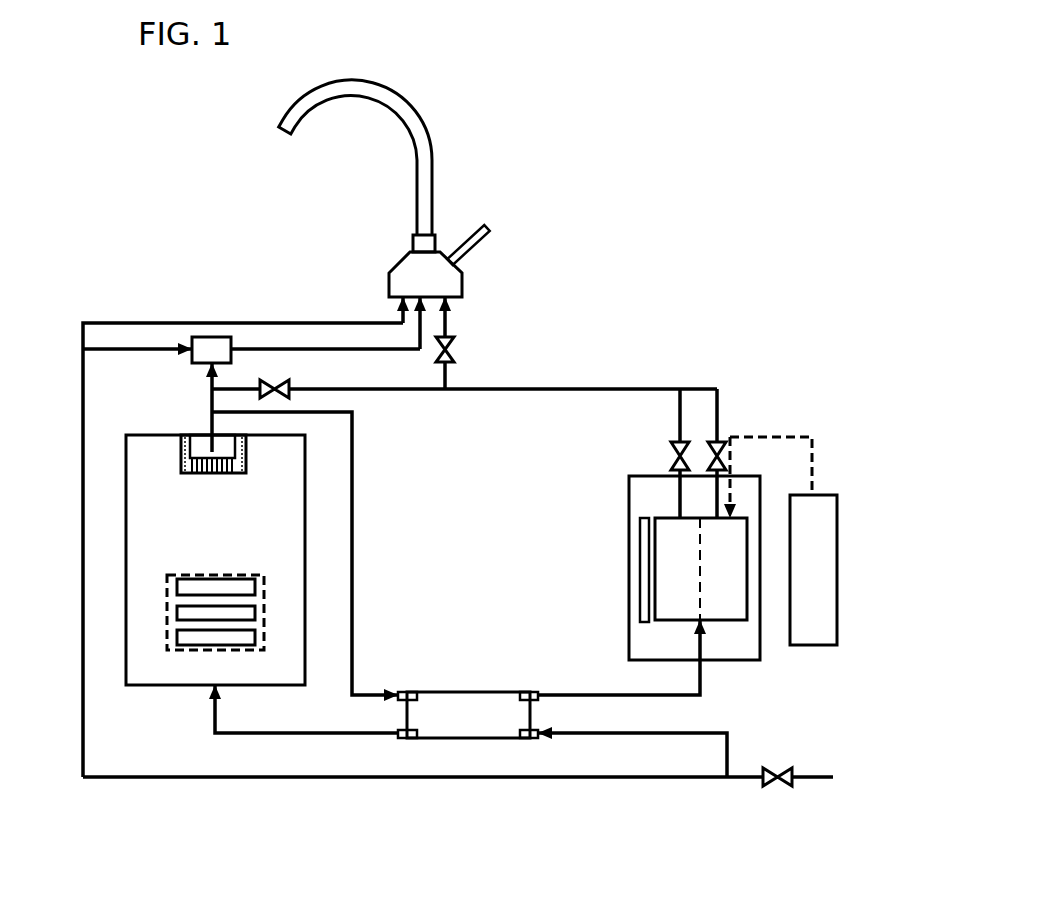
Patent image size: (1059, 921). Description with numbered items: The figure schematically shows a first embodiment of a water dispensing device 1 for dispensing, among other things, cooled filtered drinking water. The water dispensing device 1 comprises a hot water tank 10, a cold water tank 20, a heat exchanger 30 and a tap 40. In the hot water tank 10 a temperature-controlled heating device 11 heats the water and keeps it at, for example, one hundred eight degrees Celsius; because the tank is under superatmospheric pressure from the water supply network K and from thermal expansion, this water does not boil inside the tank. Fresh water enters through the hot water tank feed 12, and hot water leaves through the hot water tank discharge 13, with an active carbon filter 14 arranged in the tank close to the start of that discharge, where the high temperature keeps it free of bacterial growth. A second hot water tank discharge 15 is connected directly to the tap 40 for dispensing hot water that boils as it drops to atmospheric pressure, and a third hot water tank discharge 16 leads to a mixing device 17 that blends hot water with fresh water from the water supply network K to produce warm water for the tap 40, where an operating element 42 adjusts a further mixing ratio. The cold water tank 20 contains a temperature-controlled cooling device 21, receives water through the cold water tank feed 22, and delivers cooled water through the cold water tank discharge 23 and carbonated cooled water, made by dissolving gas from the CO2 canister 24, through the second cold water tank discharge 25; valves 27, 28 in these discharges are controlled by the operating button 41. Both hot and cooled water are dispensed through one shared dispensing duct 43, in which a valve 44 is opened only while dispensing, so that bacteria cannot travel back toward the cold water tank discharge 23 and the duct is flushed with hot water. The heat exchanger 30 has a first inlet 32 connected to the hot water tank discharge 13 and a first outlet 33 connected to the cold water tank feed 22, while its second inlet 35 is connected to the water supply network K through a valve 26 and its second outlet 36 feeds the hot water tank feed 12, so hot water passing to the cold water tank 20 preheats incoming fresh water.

The water dispensing device 1 is at (645, 238).
The hot water tank 10 is at (126, 540).
The heating device 11 is at (188, 613).
The hot water tank feed 12 is at (212, 713).
The hot water tank discharge 13 is at (252, 410).
The filter 14 is at (183, 450).
The second hot water tank discharge 15 is at (240, 387).
The third hot water tank discharge 16 is at (210, 380).
The mixing device 17 is at (205, 337).
The cold water tank 20 is at (657, 476).
The cooling device 21 is at (648, 570).
The cold water tank feed 22 is at (703, 668).
The cold water tank discharge 23 is at (682, 440).
The CO2 canister 24 is at (813, 530).
The second cold water tank discharge 25 is at (717, 413).
The valve 26 is at (787, 783).
The valve 27 is at (678, 443).
The valve 28 is at (720, 462).
The heat exchanger 30 is at (482, 727).
The first inlet 32 is at (400, 695).
The first outlet 33 is at (533, 695).
The second inlet 35 is at (537, 737).
The second outlet 36 is at (402, 737).
The tap 40 is at (423, 172).
The operating button 41 is at (422, 243).
The operating element 42 is at (478, 240).
The dispensing duct 43 is at (448, 320).
The valve 44 is at (447, 362).
The water supply network K is at (474, 759).